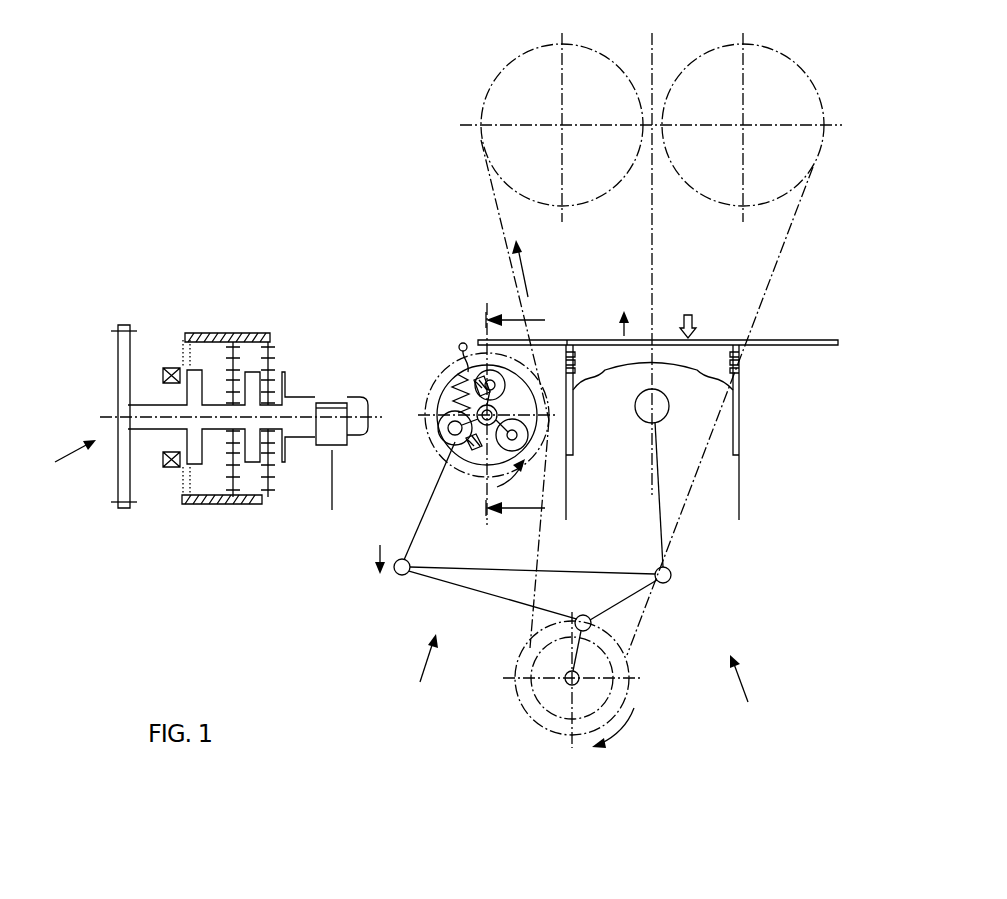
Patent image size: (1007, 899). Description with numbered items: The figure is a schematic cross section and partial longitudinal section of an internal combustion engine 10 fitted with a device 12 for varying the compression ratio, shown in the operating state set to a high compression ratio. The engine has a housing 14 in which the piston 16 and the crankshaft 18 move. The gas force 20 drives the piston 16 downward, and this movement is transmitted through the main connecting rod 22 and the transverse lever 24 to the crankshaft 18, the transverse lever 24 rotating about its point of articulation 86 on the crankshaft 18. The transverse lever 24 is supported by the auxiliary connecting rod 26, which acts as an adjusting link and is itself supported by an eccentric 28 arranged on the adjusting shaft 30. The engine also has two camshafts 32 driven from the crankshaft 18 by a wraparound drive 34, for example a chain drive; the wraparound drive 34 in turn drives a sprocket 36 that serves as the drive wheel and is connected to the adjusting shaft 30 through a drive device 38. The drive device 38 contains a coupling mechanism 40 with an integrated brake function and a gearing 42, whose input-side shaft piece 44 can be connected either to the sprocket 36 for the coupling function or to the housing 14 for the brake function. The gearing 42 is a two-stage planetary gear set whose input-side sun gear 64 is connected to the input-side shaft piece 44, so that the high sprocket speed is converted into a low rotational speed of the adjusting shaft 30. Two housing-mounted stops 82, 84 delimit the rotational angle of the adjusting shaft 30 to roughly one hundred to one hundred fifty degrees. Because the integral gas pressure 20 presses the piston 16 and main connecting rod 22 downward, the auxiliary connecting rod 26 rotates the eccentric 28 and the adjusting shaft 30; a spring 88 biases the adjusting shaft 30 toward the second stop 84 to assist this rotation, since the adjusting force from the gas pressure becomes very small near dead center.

The internal combustion engine 10 is at (766, 733).
The device for varying the compression ratio 12 is at (424, 716).
The housing 14 is at (808, 341).
The piston 16 is at (740, 366).
The crankshaft 18 is at (580, 655).
The gas force 20 is at (690, 314).
The main connecting rod 22 is at (662, 520).
The transverse lever 24 is at (497, 598).
The auxiliary connecting rod 26 is at (425, 520).
The eccentric 28 is at (442, 372).
The adjusting shaft 30 is at (312, 400).
The camshafts 32 is at (590, 208).
The wraparound drive 34 is at (498, 210).
The sprocket 36 is at (442, 400).
The drive device 38 is at (44, 478).
The coupling mechanism 40 is at (178, 368).
The gearing 42 is at (258, 498).
The input-side shaft piece 44 is at (212, 408).
The input-side sun gear 64 is at (212, 488).
The housing-mounted stop 82 is at (450, 446).
The second stop 84 is at (480, 372).
The point of articulation 86 is at (595, 622).
The spring 88 is at (462, 345).